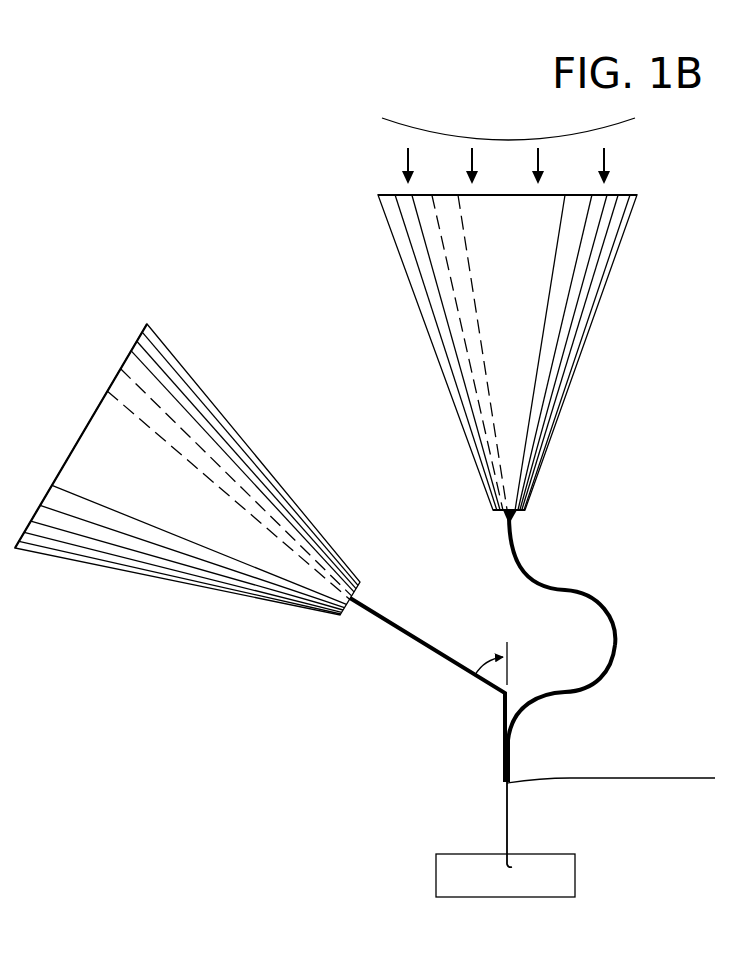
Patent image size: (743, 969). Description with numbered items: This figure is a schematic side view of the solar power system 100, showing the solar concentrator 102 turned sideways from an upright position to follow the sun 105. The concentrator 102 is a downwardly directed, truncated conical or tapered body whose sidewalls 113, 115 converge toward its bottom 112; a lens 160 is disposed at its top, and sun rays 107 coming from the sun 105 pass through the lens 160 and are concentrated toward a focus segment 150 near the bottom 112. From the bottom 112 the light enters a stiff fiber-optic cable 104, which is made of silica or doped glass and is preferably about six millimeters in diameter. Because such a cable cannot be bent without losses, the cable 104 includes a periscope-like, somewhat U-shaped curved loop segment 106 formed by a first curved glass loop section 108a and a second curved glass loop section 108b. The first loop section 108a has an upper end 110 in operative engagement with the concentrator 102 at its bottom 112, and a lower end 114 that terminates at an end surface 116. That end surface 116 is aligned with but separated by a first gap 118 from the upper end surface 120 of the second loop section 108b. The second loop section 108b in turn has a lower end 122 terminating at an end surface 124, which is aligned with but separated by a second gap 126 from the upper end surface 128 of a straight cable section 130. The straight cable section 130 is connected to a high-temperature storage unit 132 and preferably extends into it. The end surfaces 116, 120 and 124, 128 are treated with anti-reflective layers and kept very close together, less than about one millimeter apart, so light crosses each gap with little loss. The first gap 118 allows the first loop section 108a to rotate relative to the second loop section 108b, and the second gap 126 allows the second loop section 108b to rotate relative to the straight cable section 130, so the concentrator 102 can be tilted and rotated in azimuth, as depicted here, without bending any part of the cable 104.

The solar power system 100 is at (183, 217).
The solar concentrator 102 is at (400, 256).
The fiber-optic cable 104 is at (604, 648).
The sun 105 is at (527, 131).
The curved loop segment 106 is at (566, 631).
The sun rays 107 is at (407, 158).
The first curved glass loop section 108a is at (562, 590).
The second curved glass loop section 108b is at (522, 713).
The upper end 110 is at (500, 516).
The bottom 112 is at (497, 513).
The sidewall 113 is at (418, 304).
The sidewall 115 is at (580, 362).
The lower end 114 is at (590, 690).
The end surface 116 is at (570, 690).
The first gap 118 is at (565, 694).
The upper end surface 120 is at (553, 692).
The lower end 122 is at (504, 753).
The end surface 124 is at (504, 773).
The second gap 126 is at (507, 784).
The upper end surface 128 is at (507, 800).
The straight cable section 130 is at (507, 830).
The high-temperature storage unit 132 is at (436, 874).
The focus segment 150 is at (522, 512).
The lens 160 is at (628, 194).